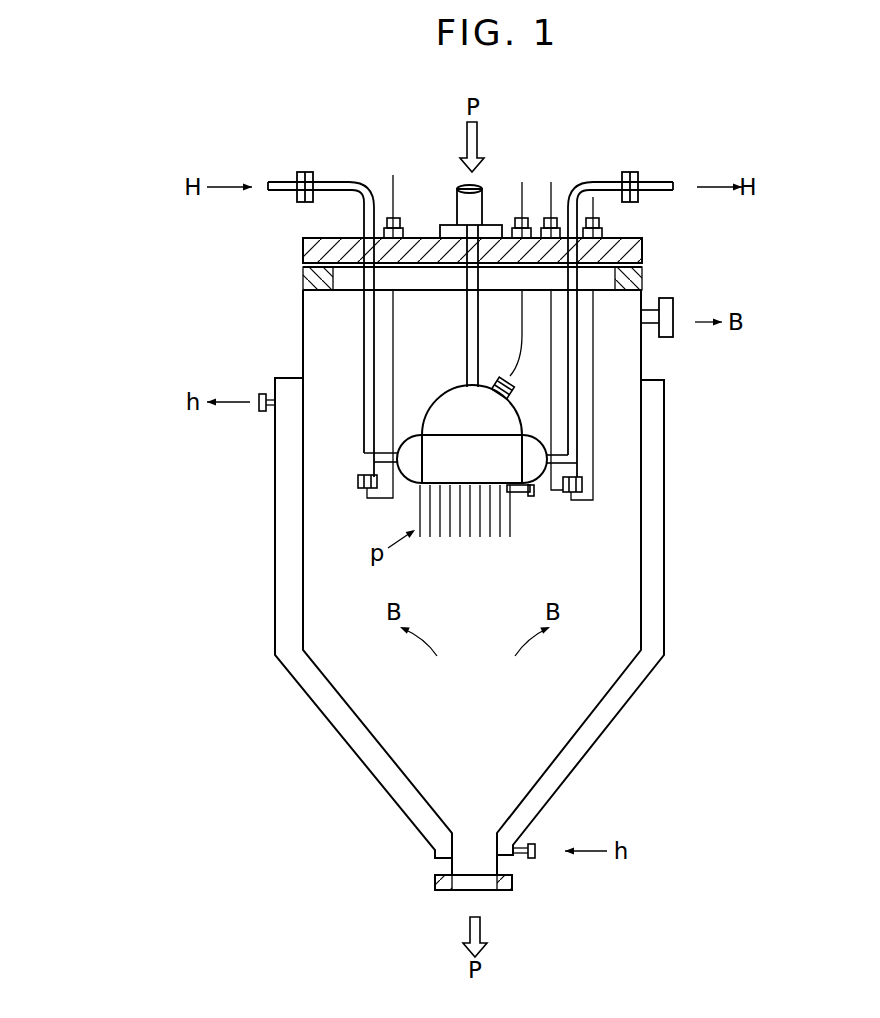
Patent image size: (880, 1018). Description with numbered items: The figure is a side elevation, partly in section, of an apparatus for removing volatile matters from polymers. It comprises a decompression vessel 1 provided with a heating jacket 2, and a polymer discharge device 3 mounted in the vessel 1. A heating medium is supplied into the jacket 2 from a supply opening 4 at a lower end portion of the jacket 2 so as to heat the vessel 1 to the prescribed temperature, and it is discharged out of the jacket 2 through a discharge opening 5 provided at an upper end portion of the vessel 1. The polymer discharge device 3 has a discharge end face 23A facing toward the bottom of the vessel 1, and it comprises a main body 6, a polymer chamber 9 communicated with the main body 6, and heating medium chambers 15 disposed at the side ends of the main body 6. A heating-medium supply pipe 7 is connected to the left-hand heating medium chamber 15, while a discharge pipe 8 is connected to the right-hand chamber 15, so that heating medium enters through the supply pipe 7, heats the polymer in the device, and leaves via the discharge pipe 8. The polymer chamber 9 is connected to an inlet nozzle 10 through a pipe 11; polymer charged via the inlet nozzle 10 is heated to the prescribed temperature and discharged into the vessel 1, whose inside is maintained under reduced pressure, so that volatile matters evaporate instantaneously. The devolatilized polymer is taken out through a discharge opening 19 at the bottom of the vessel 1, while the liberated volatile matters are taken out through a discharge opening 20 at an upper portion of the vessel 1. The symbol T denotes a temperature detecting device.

The decompression vessel 1 is at (299, 627).
The heating jacket 2 is at (275, 553).
The polymer discharge device 3 is at (415, 425).
The supply opening 4 is at (517, 855).
The discharge opening 5 is at (268, 398).
The main body 6 is at (492, 474).
The heating-medium supply pipe 7 is at (283, 182).
The discharge pipe 8 is at (600, 180).
The polymer chamber 9 is at (515, 428).
The inlet nozzle 10 is at (457, 208).
The pipe 11 is at (463, 310).
The heating medium chambers 15 is at (400, 455).
The discharge opening 19 is at (450, 867).
The discharge opening 20 is at (678, 308).
The discharge end face 23A is at (428, 493).
The temperature detecting device T is at (353, 483).